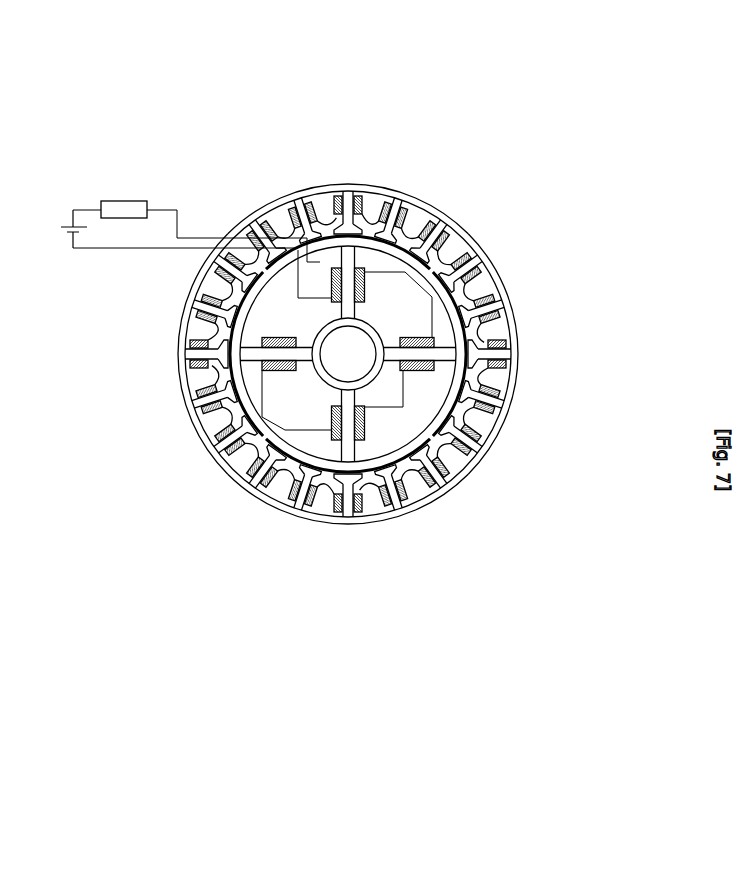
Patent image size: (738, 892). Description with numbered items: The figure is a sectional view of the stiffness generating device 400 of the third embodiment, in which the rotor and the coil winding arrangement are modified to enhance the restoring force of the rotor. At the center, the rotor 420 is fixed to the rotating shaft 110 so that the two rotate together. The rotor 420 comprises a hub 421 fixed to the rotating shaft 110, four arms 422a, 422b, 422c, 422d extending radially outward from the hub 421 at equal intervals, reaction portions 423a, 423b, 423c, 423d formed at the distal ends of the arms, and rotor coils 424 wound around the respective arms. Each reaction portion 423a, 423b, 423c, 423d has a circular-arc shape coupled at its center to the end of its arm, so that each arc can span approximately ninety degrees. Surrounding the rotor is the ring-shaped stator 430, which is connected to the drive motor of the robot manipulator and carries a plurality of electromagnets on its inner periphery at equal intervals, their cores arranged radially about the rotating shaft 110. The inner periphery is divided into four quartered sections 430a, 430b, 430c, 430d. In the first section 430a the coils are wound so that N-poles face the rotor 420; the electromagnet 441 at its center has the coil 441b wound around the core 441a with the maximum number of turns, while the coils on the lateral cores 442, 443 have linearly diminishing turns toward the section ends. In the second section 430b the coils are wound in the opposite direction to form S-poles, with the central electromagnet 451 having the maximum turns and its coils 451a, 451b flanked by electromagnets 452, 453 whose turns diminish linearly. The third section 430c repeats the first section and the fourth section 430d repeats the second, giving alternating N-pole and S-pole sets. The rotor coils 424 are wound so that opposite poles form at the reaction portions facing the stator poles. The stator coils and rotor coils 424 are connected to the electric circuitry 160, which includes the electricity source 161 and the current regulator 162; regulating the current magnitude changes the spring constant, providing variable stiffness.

The rotating shaft 110 is at (436, 487).
The electric circuitry 160 is at (172, 252).
The electricity source 161 is at (66, 210).
The current regulator 162 is at (122, 199).
The stiffness generating device 400 is at (205, 160).
The rotor 420 is at (513, 286).
The hub 421 is at (240, 432).
The arm 422a is at (478, 223).
The arm 422b is at (513, 413).
The arm 422c is at (280, 498).
The arm 422d is at (203, 340).
The reaction portion 423a is at (478, 206).
The reaction portion 423b is at (520, 380).
The reaction portion 423c is at (305, 512).
The reaction portion 423d is at (203, 368).
The rotor coils 424 is at (398, 520).
The stator 430 is at (286, 183).
The first section 430a is at (352, 178).
The second section 430b is at (645, 208).
The third section 430c is at (348, 554).
The fourth section 430d is at (60, 490).
The electromagnet 441 is at (362, 182).
The core 441a is at (339, 185).
The coil 441b is at (384, 185).
The core 442 is at (421, 191).
The core 443 is at (259, 198).
The electromagnet 451 is at (597, 356).
The coil 451a is at (522, 364).
The coil 451b is at (522, 343).
The electromagnet 452 is at (497, 451).
The electromagnet 453 is at (494, 257).